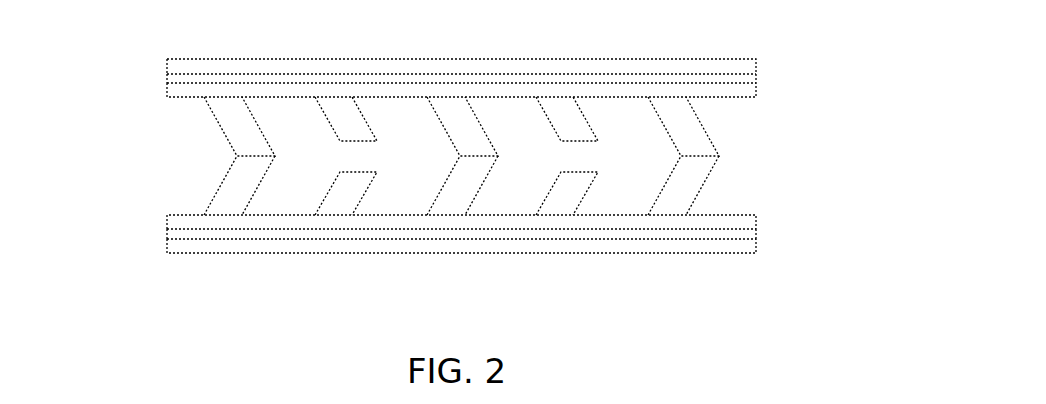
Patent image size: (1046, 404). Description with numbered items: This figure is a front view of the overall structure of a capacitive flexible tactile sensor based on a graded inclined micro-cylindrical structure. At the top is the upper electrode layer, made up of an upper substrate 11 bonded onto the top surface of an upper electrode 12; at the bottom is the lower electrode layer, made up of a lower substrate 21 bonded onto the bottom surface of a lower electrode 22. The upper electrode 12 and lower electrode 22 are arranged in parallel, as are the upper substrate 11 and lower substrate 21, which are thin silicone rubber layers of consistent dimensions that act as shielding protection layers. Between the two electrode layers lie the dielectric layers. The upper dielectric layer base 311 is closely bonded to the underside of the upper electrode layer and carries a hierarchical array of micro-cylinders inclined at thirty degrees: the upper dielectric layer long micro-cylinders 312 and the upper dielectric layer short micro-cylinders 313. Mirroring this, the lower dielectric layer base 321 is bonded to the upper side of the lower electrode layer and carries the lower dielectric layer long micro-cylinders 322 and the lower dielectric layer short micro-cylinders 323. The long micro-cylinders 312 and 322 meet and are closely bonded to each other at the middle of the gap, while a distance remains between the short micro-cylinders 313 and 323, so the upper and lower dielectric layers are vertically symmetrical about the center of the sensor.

The upper substrate 11 is at (756, 63).
The upper electrode 12 is at (756, 79).
The upper dielectric layer base 311 is at (167, 93).
The upper dielectric layer long micro-cylinders 312 is at (238, 126).
The upper dielectric layer short micro-cylinders 313 is at (575, 126).
The lower dielectric layer base 321 is at (167, 224).
The lower dielectric layer long micro-cylinders 322 is at (240, 182).
The lower dielectric layer short micro-cylinders 323 is at (575, 181).
The lower electrode 22 is at (756, 234).
The lower substrate 21 is at (756, 245).